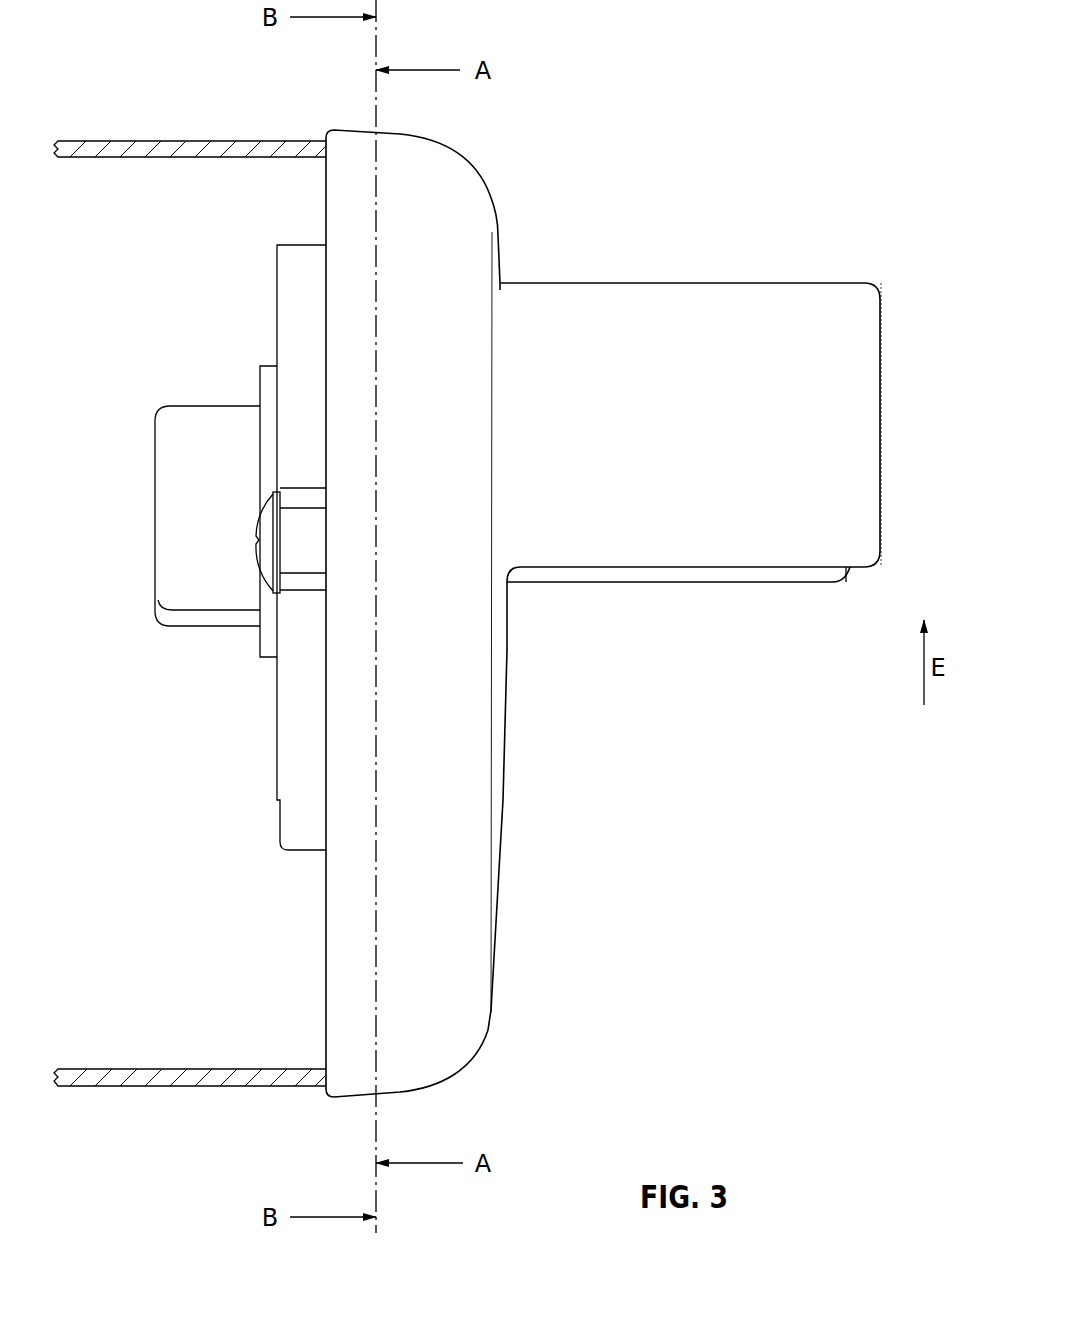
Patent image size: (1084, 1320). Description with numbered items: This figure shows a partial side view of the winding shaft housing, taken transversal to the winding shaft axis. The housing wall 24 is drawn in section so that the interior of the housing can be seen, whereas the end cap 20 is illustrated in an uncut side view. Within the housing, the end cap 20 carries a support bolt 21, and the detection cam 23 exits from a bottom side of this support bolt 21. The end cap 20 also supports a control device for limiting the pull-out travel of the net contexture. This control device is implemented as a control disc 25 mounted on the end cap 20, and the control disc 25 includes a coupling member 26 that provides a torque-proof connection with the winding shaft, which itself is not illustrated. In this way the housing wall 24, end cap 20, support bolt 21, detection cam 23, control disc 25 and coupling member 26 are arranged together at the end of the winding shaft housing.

The end cap 20 is at (544, 172).
The support bolt 21 is at (690, 425).
The detection cam 23 is at (725, 583).
The housing wall 24 is at (152, 1077).
The control disc 25 is at (270, 855).
The coupling member 26 is at (153, 628).